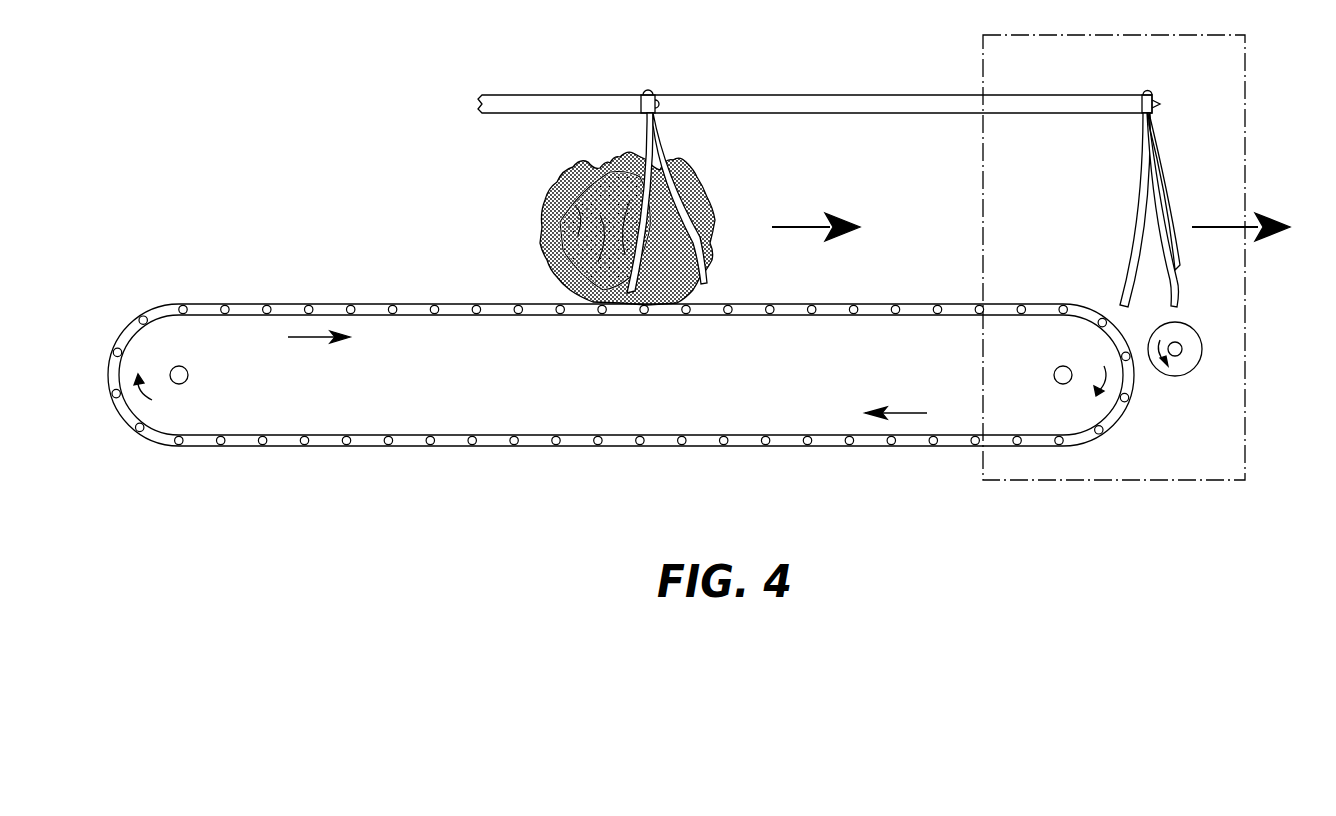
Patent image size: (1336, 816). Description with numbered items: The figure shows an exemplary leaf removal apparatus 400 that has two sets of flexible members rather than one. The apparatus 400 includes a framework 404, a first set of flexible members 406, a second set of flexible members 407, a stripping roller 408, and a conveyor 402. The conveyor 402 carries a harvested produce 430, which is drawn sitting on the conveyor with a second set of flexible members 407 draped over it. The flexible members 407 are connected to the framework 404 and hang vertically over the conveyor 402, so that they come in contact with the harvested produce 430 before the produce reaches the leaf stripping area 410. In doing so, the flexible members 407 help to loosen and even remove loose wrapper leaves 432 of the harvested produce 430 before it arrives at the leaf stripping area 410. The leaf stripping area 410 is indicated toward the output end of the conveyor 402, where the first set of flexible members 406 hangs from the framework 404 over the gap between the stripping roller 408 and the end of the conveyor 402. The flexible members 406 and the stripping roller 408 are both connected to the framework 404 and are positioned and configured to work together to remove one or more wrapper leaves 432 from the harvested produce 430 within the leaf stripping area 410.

The leaf removal apparatus 400 is at (270, 145).
The conveyor 402 is at (868, 318).
The framework 404 is at (900, 94).
The first set of flexible members 406 is at (1157, 160).
The second set of flexible members 407 is at (665, 152).
The stripping roller 408 is at (1188, 340).
The leaf stripping area 410 is at (983, 86).
The harvested produce 430 is at (610, 172).
The wrapper leaves 432 is at (550, 255).